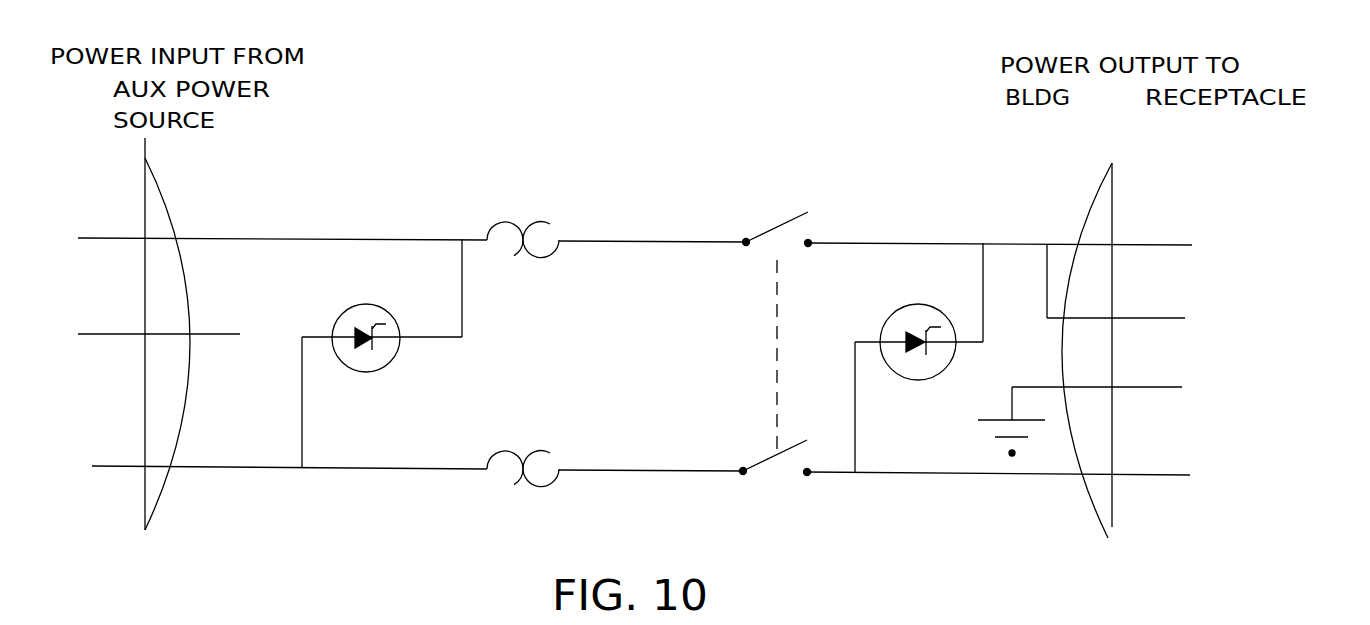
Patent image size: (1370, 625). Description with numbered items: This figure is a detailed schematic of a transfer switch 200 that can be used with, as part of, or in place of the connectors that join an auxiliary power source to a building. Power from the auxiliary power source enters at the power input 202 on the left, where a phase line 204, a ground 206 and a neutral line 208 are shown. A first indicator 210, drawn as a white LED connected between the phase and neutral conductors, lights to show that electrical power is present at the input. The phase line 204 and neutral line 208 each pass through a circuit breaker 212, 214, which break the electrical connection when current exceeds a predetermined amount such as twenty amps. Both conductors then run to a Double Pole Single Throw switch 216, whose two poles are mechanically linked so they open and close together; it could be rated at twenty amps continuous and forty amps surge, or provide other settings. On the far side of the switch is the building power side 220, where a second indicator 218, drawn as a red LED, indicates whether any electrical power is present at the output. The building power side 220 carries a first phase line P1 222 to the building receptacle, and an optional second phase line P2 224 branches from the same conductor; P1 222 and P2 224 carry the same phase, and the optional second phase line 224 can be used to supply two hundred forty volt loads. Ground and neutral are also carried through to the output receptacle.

The transfer switch 200 is at (586, 139).
The power input 202 is at (132, 334).
The phase line 204 is at (238, 241).
The ground 206 is at (232, 337).
The neutral line 208 is at (227, 466).
The first indicator 210 is at (390, 371).
The circuit breaker 212 is at (543, 272).
The circuit breaker 214 is at (552, 497).
The Double Pole Single Throw (DPST) switch 216 is at (743, 203).
The second indicator 218 is at (905, 393).
The building power side 220 is at (1217, 351).
The first phase line P1 222 is at (1160, 182).
The optional second phase line P2 224 is at (1277, 300).